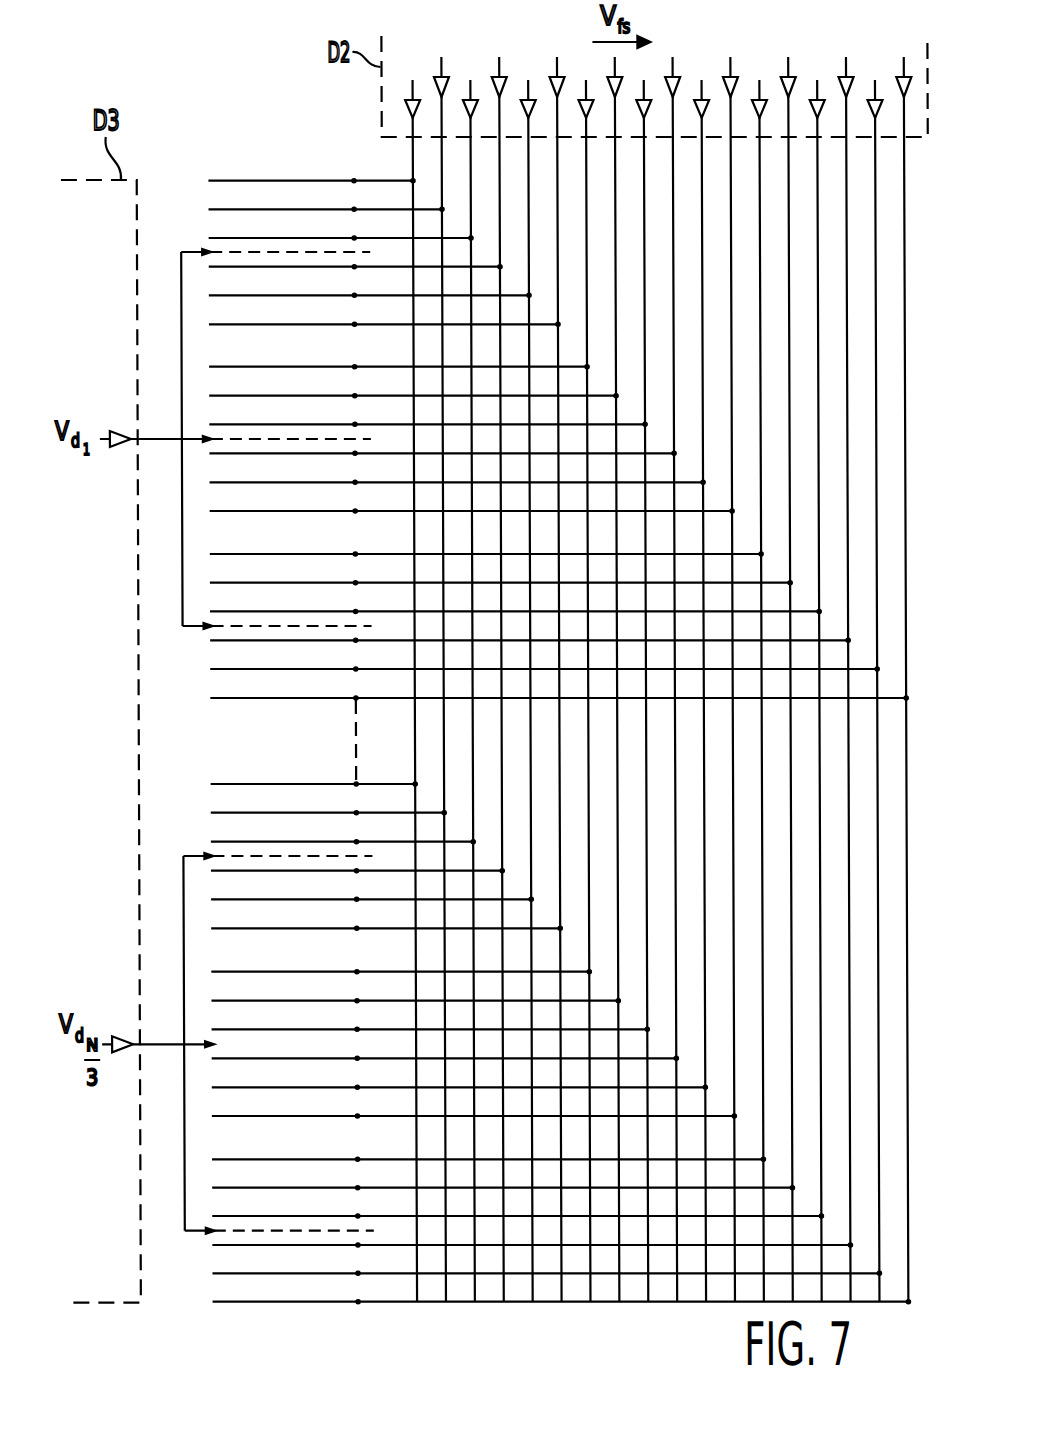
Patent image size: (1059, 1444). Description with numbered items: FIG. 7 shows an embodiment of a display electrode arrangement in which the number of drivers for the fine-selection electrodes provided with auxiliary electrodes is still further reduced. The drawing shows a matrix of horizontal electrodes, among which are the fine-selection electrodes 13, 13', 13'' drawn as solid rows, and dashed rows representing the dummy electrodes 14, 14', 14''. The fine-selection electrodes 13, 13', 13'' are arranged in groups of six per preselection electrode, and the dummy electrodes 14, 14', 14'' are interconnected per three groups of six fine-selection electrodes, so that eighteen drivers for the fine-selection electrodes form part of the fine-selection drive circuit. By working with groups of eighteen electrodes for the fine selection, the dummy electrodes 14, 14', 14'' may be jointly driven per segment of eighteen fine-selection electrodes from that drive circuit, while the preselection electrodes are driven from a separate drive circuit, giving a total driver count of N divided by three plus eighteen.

The row electrode 13 is at (310, 140).
The row electrode 13' is at (325, 171).
The row electrode 13'' is at (339, 168).
The dummy row line 14 is at (290, 193).
The dummy row line 14' is at (290, 383).
The dummy row line 14'' is at (291, 570).